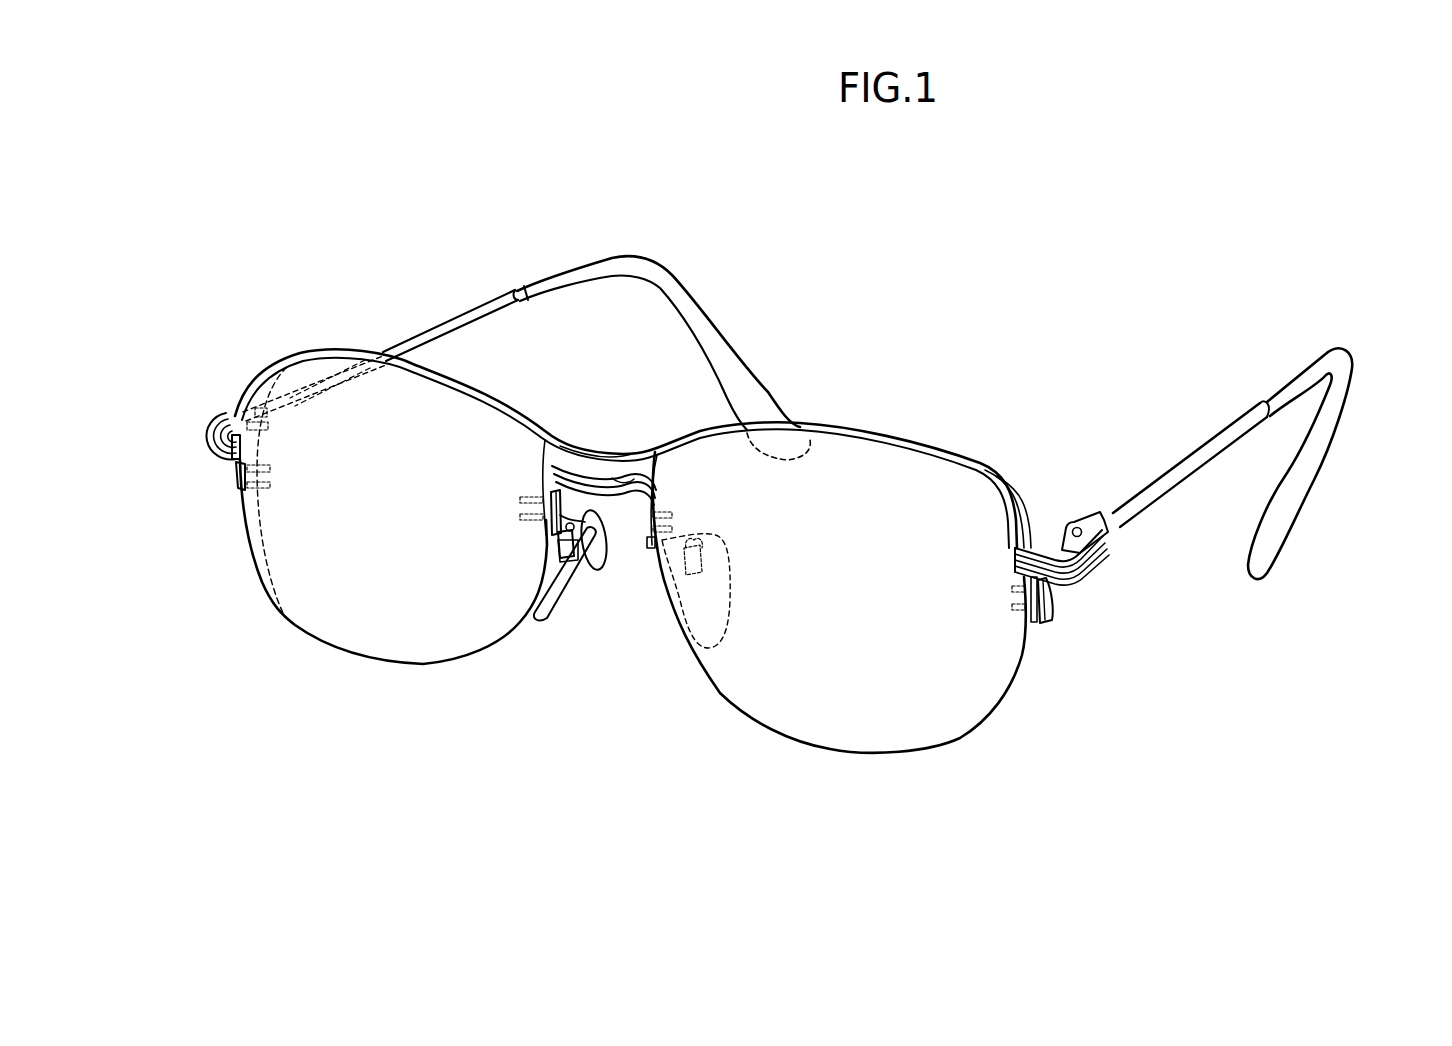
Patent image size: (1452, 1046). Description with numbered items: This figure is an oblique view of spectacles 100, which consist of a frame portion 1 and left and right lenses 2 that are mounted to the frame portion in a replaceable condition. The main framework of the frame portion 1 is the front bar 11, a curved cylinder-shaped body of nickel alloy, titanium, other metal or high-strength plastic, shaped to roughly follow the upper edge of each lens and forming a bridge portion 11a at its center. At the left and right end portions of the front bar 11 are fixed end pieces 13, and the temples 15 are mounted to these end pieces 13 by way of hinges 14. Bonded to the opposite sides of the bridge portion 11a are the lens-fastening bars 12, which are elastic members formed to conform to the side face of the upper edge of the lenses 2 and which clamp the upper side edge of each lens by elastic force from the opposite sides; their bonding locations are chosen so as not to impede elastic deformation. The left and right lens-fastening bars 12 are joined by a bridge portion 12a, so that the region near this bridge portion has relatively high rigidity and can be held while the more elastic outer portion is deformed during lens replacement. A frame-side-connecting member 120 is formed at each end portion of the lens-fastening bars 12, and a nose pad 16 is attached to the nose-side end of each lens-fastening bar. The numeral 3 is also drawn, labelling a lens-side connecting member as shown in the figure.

The spectacles 100 is at (923, 812).
The frame portion 1 is at (846, 392).
The front bar 11 is at (884, 432).
The bridge portion 11a is at (598, 442).
The lens-fastening bar 12 is at (567, 485).
The bridge portion 12a is at (622, 468).
The end piece 13 is at (208, 425).
The hinge 14 is at (1077, 524).
The temple 15 is at (470, 315).
The nose pad 16 is at (540, 622).
The lens 2 is at (355, 622).
The lens-side connecting member 3 is at (236, 478).
The frame-side-connecting member 120 is at (544, 533).